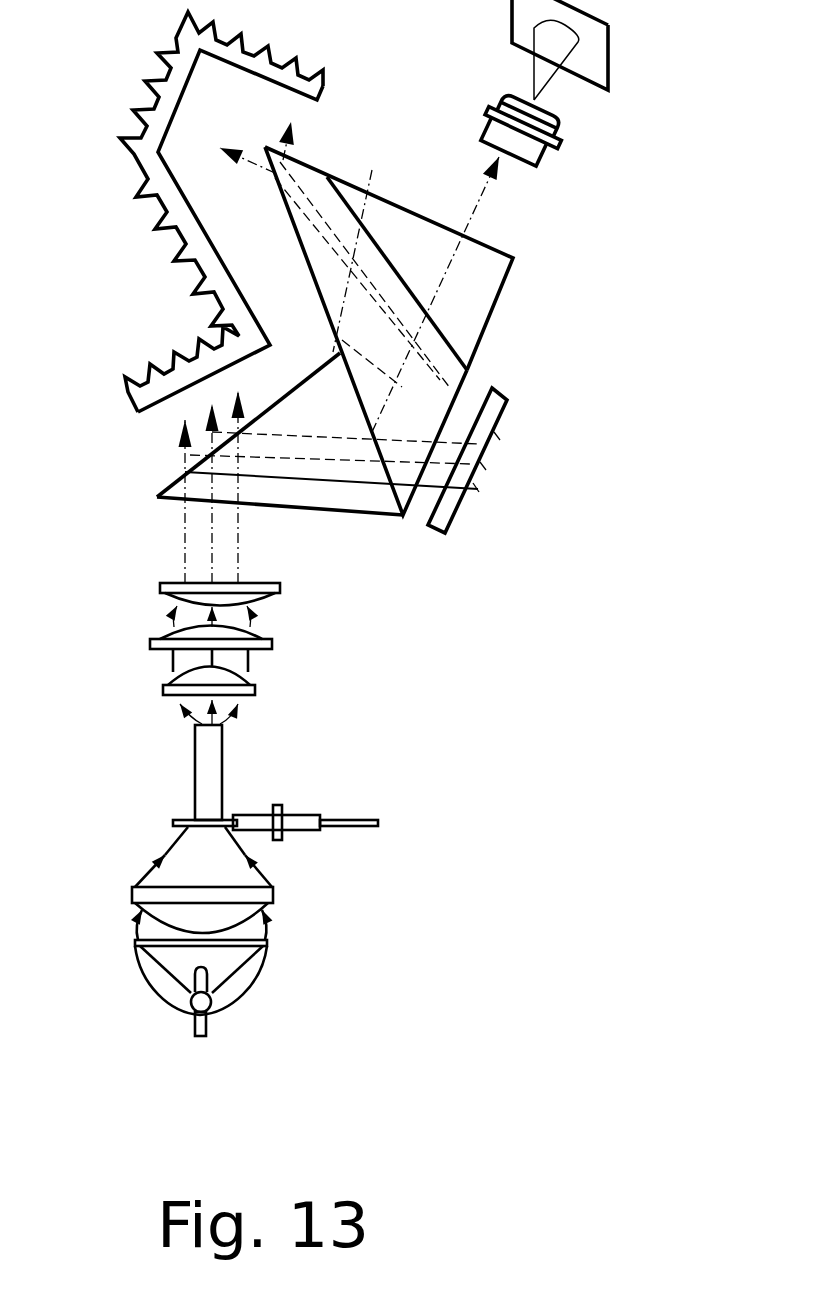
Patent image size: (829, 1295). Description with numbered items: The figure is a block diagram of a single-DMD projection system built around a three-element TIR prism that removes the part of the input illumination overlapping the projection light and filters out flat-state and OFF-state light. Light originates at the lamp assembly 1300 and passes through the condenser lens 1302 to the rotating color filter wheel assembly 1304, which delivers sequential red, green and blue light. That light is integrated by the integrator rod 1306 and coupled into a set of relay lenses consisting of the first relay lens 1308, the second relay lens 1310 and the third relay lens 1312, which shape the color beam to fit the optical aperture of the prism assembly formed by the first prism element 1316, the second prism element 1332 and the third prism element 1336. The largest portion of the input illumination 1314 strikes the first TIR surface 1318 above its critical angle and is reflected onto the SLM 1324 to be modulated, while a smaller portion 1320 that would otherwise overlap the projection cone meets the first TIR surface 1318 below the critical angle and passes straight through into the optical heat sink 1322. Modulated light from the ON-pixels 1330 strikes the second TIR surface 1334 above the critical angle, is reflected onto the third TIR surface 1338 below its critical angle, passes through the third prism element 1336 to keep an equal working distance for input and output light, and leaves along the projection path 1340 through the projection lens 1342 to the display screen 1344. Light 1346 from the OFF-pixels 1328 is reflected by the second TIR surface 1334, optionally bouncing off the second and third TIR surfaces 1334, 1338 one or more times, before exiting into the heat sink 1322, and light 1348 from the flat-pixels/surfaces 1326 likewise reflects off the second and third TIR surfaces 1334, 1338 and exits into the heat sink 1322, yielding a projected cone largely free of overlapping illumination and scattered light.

The lamp assembly 1300 is at (253, 973).
The condenser lens 1302 is at (270, 888).
The rotating color filter wheel assembly 1304 is at (330, 817).
The integrator rod 1306 is at (222, 762).
The first relay lens 1308 is at (255, 687).
The second relay lens 1310 is at (150, 647).
The third relay lens 1312 is at (160, 587).
The input illumination 1314 is at (182, 528).
The first prism element 1316 is at (370, 520).
The first TIR surface 1318 is at (163, 490).
The smaller portion of the input illumination 1320 is at (173, 438).
The optical heat sink 1322 is at (130, 407).
The SLM (DMD) 1324 is at (436, 535).
The flat-pixels/surfaces 1326 is at (483, 466).
The OFF-pixels 1328 is at (497, 437).
The ON-pixels 1330 is at (477, 487).
The second prism element 1332 is at (468, 380).
The second TIR surface 1334 is at (318, 298).
The third prism element 1336 is at (493, 320).
The third TIR surface 1338 is at (369, 246).
The projection path 1340 is at (483, 203).
The projection lens 1342 is at (488, 103).
The display screen 1344 is at (613, 53).
The OFF-pixel light 1346 is at (284, 148).
The flat-pixel light 1348 is at (257, 163).